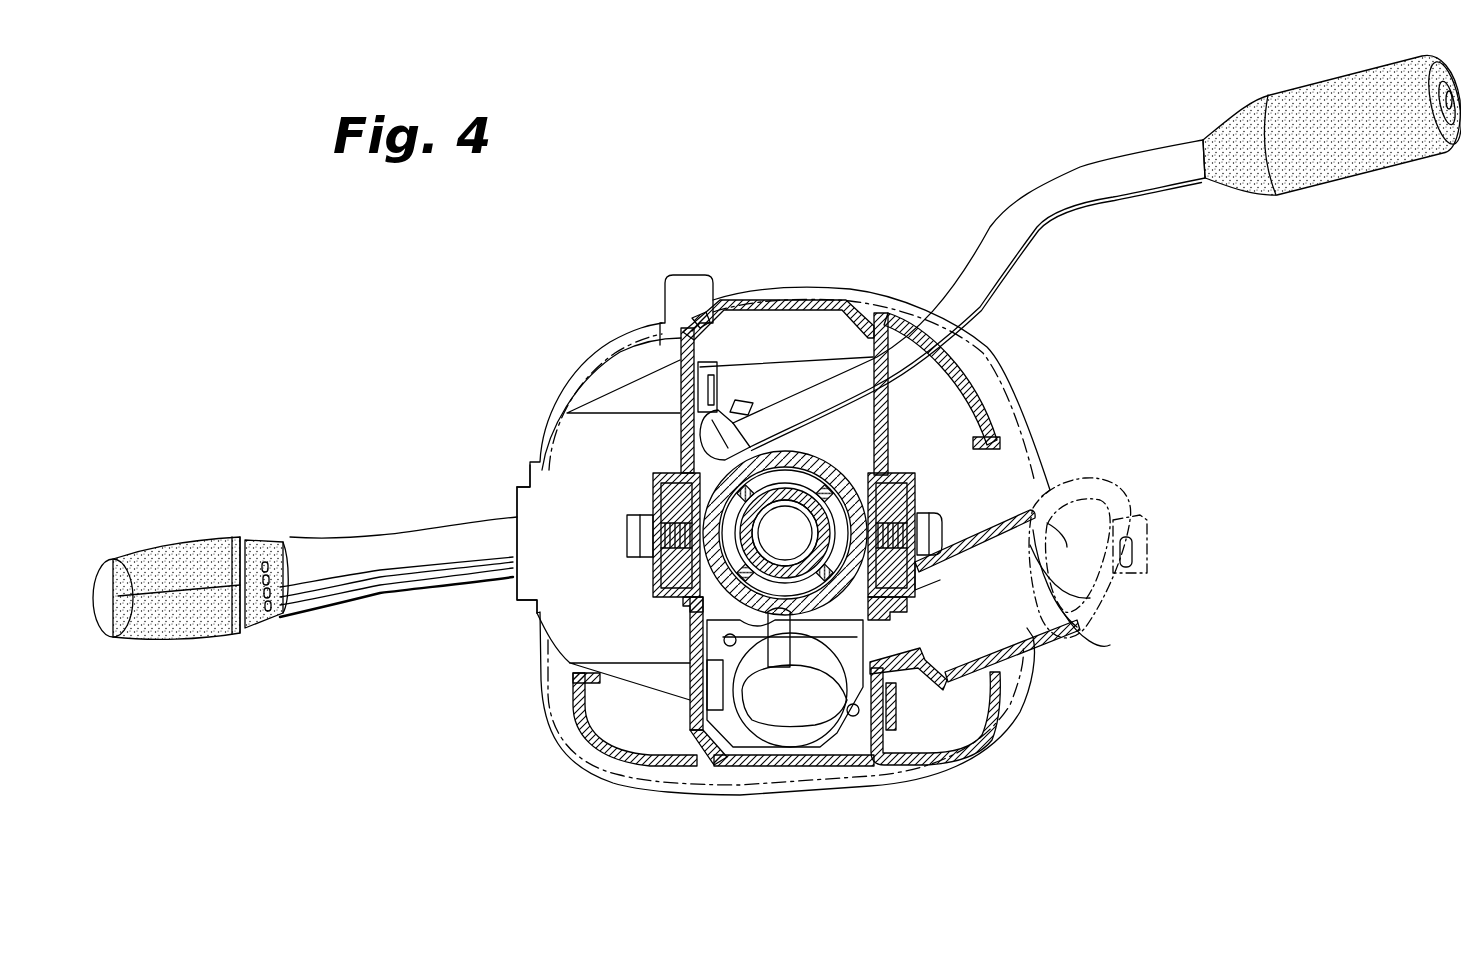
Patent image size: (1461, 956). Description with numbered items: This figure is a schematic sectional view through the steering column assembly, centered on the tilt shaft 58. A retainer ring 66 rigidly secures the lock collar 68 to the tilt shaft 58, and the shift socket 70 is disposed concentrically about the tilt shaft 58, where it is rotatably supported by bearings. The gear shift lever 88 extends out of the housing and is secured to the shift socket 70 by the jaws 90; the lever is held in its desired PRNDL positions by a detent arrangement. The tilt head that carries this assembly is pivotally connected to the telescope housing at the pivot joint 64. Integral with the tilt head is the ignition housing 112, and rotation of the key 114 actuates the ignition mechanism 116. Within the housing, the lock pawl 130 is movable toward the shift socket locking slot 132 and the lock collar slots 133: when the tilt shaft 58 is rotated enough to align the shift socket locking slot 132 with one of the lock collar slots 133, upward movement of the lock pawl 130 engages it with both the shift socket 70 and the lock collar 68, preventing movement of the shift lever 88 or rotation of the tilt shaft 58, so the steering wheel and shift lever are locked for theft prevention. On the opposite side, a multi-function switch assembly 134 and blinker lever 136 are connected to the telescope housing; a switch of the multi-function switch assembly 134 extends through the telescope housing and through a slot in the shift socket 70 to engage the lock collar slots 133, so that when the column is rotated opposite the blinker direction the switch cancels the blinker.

The tilt shaft 58 is at (822, 480).
The pivot joint 64 is at (943, 537).
The retainer ring 66 is at (775, 460).
The lock collar 68 is at (795, 470).
The shift socket 70 is at (912, 489).
The gear shift lever 88 is at (997, 233).
The jaws 90 is at (740, 400).
The ignition housing 112 is at (1053, 623).
The key 114 is at (1143, 553).
The ignition mechanism 116 is at (987, 633).
The lock pawl 130 is at (773, 667).
The shift socket locking slot 132 is at (787, 623).
The lock collar slots 133 is at (684, 610).
The multi-function switch assembly 134 is at (513, 487).
The blinker lever 136 is at (380, 593).